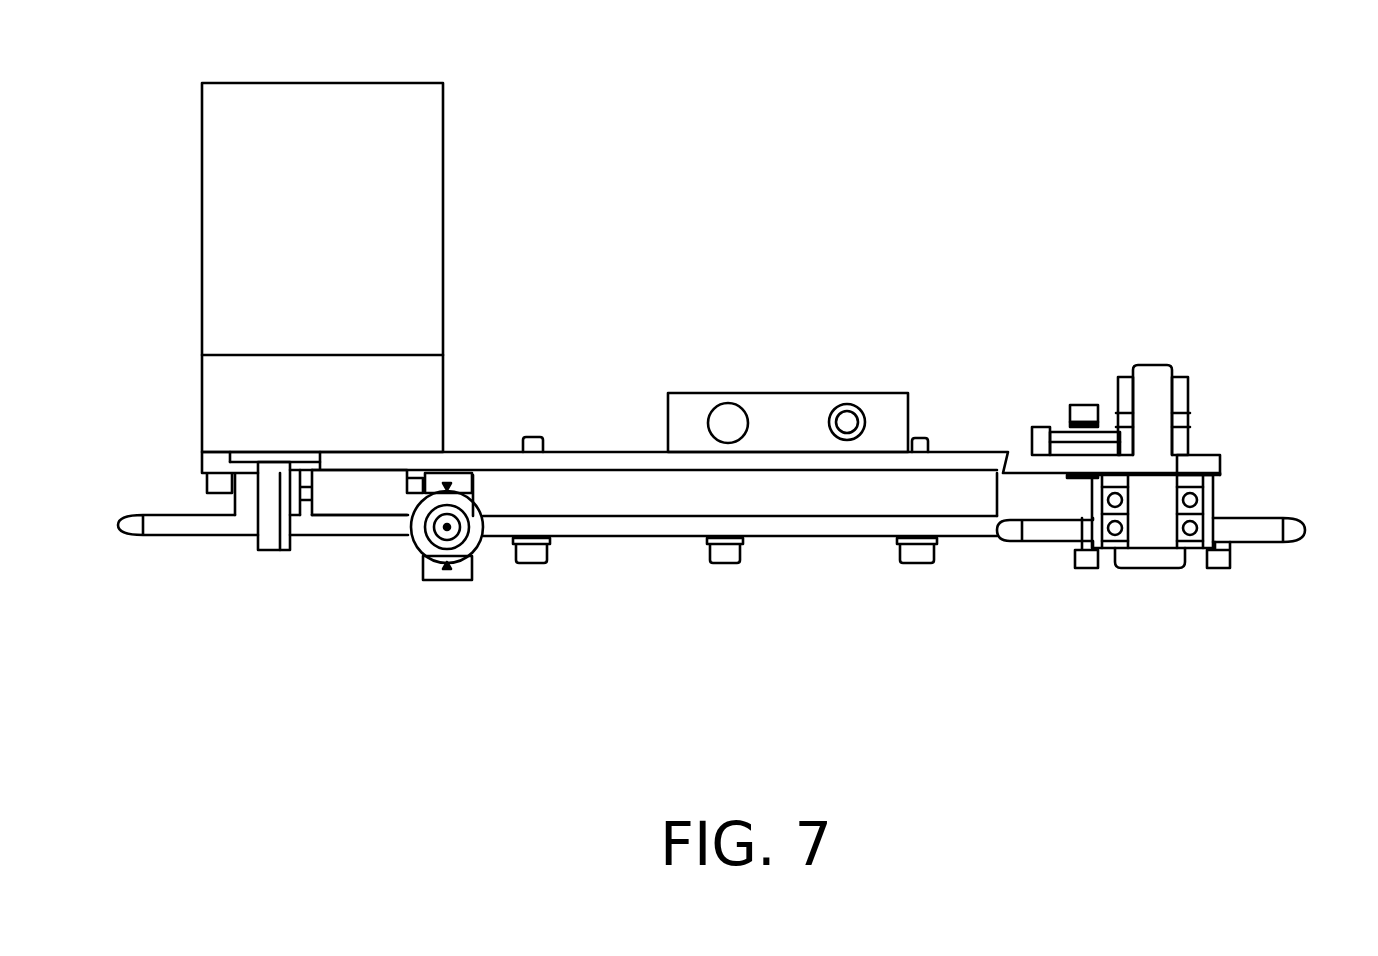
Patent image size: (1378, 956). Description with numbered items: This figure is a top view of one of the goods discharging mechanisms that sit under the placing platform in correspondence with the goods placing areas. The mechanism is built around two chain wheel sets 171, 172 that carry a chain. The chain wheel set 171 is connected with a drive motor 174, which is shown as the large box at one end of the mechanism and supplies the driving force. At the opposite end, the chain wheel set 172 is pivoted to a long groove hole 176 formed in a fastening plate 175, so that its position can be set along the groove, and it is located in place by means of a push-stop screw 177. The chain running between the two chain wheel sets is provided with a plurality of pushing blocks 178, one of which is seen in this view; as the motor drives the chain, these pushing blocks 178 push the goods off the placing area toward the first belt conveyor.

The chain wheel set 171 is at (360, 525).
The chain wheel set 172 is at (1052, 535).
The drive motor 174 is at (430, 150).
The fastening plate 175 is at (963, 465).
The long groove hole 176 is at (1178, 463).
The push-stop screw 177 is at (1088, 400).
The pushing block 178 is at (473, 543).